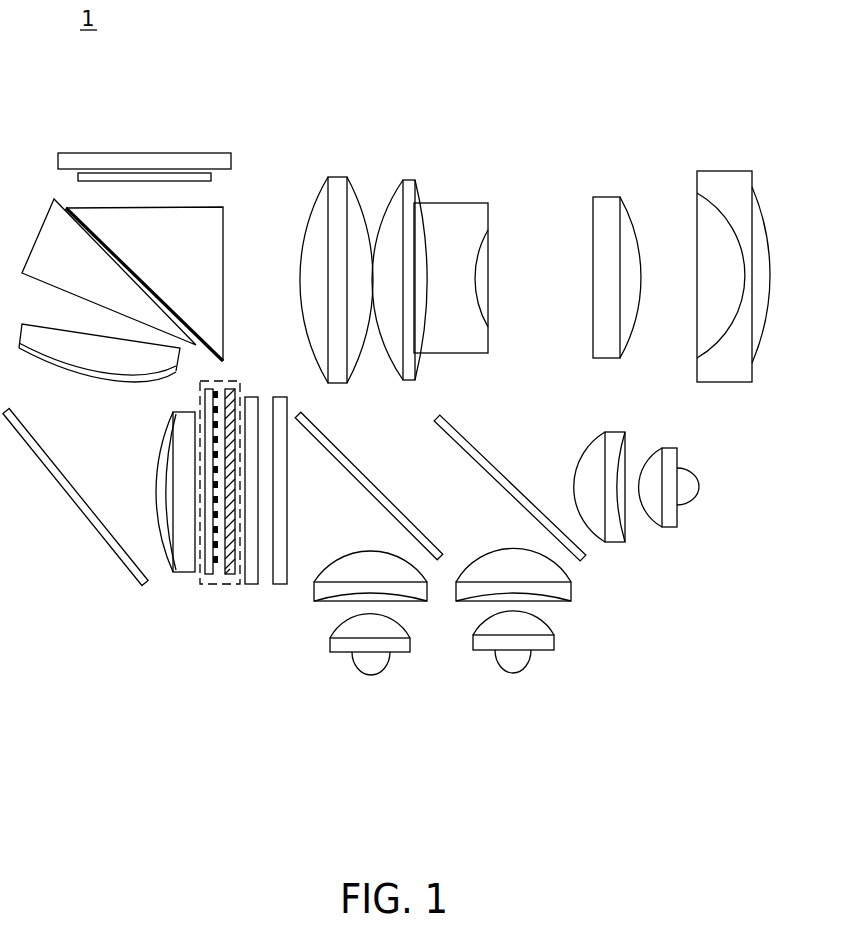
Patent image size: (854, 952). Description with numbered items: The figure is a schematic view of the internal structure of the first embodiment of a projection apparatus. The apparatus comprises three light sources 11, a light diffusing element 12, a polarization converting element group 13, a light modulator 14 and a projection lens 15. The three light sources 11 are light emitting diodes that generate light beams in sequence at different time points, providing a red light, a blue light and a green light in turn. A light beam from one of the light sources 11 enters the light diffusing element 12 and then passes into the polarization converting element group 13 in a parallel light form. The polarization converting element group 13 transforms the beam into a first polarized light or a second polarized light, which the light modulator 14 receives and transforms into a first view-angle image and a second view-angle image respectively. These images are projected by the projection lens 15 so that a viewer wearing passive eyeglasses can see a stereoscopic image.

The light source 11 is at (410, 645).
The light diffusing element 12 is at (282, 588).
The polarization converting element group 13 is at (212, 588).
The light modulator 14 is at (193, 170).
The projection lens 15 is at (720, 171).